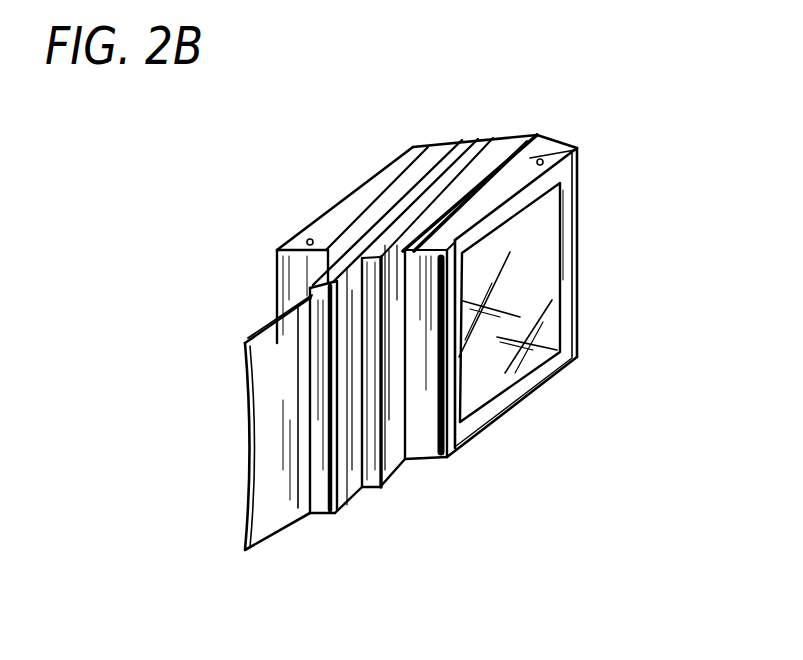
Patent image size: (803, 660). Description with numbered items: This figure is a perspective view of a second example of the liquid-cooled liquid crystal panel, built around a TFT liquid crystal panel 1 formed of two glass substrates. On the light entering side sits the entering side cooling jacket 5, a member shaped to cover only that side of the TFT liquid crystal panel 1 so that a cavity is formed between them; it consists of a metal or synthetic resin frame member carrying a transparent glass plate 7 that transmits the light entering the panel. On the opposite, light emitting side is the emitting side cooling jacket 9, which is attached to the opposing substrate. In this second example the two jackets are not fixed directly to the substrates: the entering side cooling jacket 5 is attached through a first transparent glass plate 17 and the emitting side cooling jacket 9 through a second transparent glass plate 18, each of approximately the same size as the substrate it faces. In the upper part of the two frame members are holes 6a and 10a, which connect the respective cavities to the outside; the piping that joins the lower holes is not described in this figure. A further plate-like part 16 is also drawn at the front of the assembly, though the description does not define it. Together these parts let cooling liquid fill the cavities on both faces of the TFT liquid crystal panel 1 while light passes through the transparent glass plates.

The TFT liquid crystal panel 1 is at (523, 129).
The entering side cooling jacket 5 is at (578, 252).
The hole 6a is at (580, 157).
The transparent glass plate 7 is at (548, 313).
The emitting side cooling jacket 9 is at (357, 191).
The hole 10a is at (297, 243).
The heat radiating plate 16 is at (273, 418).
The first transparent glass plate 17 is at (536, 135).
The second transparent glass plate 18 is at (475, 133).